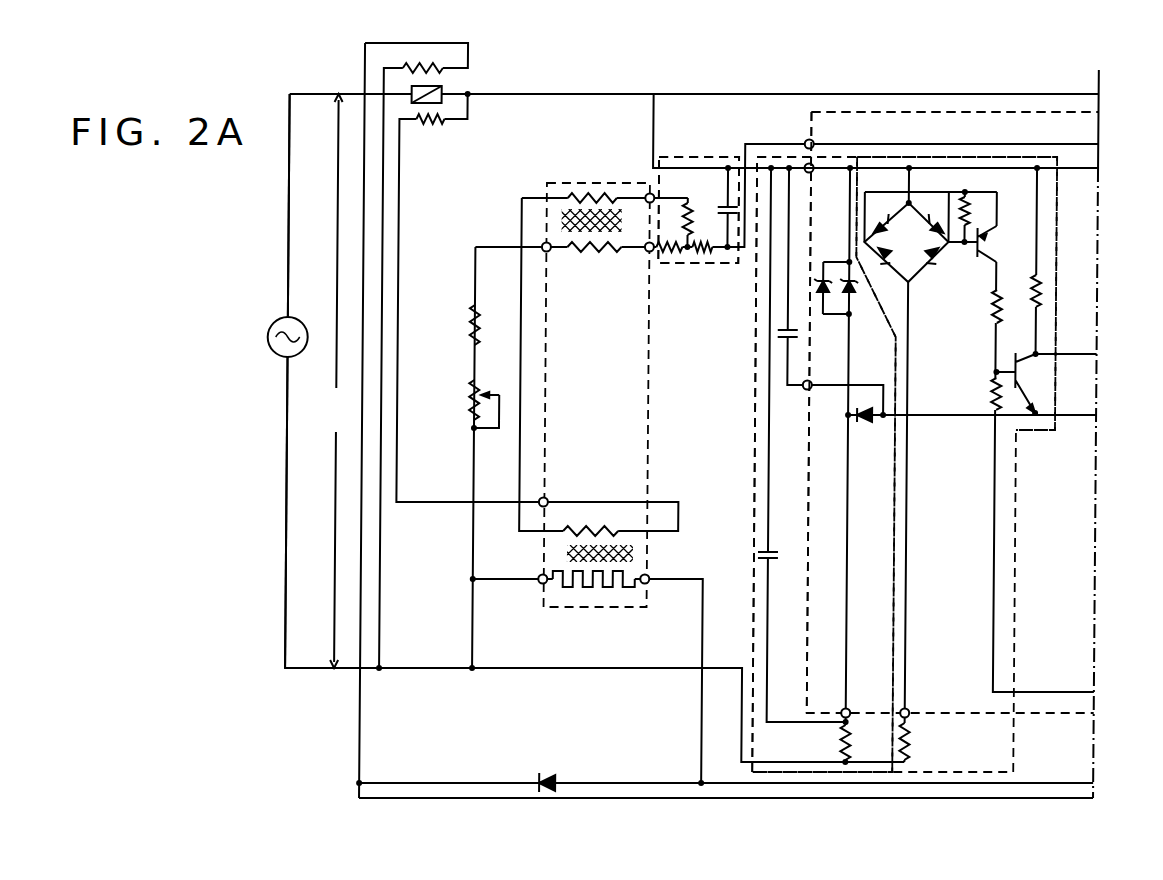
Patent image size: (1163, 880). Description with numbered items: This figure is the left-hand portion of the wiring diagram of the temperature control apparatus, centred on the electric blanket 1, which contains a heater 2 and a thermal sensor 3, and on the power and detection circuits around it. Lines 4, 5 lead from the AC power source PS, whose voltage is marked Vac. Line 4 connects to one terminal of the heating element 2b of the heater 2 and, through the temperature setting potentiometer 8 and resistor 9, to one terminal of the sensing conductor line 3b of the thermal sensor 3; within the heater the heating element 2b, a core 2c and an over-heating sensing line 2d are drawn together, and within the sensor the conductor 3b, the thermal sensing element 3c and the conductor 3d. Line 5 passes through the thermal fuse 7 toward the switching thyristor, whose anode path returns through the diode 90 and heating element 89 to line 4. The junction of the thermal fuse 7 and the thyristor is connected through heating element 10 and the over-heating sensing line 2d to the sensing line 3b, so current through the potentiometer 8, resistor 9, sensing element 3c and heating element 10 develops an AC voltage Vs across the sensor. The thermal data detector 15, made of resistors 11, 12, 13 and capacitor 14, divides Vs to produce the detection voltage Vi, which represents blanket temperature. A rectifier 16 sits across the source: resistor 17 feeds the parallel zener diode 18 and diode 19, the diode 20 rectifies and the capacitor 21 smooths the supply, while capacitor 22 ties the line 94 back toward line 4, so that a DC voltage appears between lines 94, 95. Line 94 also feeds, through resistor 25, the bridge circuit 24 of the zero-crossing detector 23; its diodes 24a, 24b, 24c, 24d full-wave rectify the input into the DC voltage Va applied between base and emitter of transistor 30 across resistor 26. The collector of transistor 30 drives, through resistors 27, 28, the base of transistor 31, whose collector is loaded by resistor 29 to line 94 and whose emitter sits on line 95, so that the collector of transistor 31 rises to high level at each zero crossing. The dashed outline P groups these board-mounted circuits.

The electric blanket 1 is at (650, 425).
The heater 2 is at (588, 592).
The heating element 2b is at (625, 592).
The heater core 2c is at (637, 553).
The over-heating sensing line 2d is at (600, 525).
The thermal sensor 3 is at (612, 255).
The sensing conductor line 3b is at (586, 252).
The thermal sensing element 3c is at (561, 220).
The conductor 3d is at (595, 190).
The line 4 is at (288, 450).
The line 5 is at (288, 280).
The thermal fuse 7 is at (442, 86).
The temperature setting potentiometer 8 is at (468, 392).
The resistor 9 is at (470, 325).
The heating element 10 is at (432, 124).
The resistor 11 is at (670, 253).
The resistor 12 is at (682, 225).
The resistor 13 is at (704, 253).
The capacitor 14 is at (722, 210).
The thermal data detector 15 is at (690, 157).
The rectifier 16 is at (777, 157).
The resistor 17 is at (842, 743).
The zener diode 18 is at (856, 300).
The diode 19 is at (828, 262).
The diode 20 is at (864, 424).
The capacitor 21 is at (800, 334).
The capacitor 22 is at (782, 555).
The zero-crossing detector 23 is at (936, 157).
The bridge circuit 24 is at (926, 254).
The diode 24a is at (886, 230).
The diode 24b is at (932, 232).
The diode 24c is at (930, 268).
The diode 24d is at (886, 270).
The resistor 25 is at (914, 743).
The resistor 26 is at (970, 200).
The resistor 27 is at (1002, 305).
The resistor 28 is at (992, 393).
The resistor 29 is at (1042, 292).
The transistor 30 is at (990, 245).
The transistor 31 is at (1036, 372).
The heating element 89 is at (401, 66).
The diode 90 is at (550, 773).
The line 94 is at (1088, 168).
The line 95 is at (932, 415).
The printed circuit board P is at (955, 112).
The AC power source PS is at (268, 340).
The AC voltage Vac is at (334, 410).
The AC voltage Vs is at (651, 253).
The detection voltage Vi is at (728, 253).
The DC voltage Va is at (970, 214).